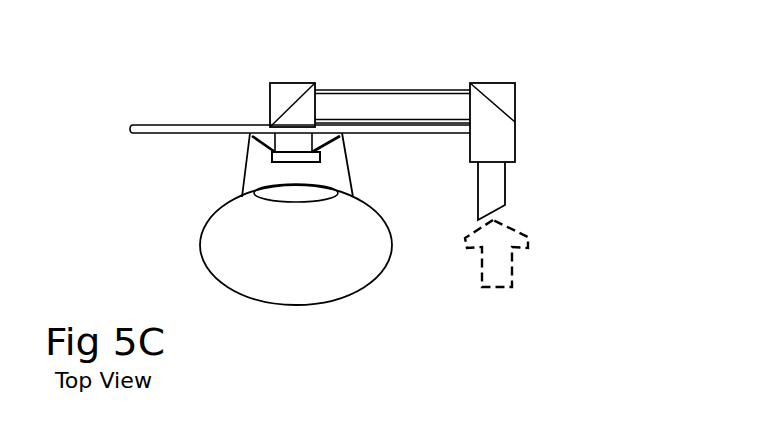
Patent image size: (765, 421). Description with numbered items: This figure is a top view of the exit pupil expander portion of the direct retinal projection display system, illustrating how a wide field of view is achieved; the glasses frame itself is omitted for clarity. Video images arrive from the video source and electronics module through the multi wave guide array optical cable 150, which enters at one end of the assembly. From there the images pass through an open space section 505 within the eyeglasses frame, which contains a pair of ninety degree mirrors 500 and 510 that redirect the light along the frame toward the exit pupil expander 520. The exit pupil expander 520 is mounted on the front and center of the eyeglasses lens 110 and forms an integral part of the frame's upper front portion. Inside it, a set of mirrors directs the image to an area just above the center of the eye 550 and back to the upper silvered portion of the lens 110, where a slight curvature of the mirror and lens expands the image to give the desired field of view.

The eyeglasses lens 110 is at (192, 124).
The ninety degree mirror 510 is at (293, 102).
The open space section 505 is at (393, 90).
The ninety degree mirror 500 is at (500, 108).
The multi wave guide array optical cable 150 is at (508, 193).
The exit pupil expander 520 is at (270, 158).
The eye 550 is at (388, 265).